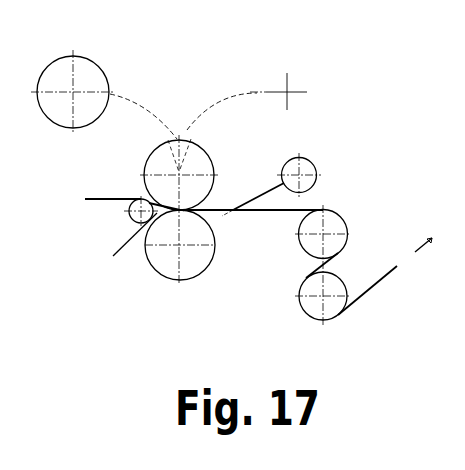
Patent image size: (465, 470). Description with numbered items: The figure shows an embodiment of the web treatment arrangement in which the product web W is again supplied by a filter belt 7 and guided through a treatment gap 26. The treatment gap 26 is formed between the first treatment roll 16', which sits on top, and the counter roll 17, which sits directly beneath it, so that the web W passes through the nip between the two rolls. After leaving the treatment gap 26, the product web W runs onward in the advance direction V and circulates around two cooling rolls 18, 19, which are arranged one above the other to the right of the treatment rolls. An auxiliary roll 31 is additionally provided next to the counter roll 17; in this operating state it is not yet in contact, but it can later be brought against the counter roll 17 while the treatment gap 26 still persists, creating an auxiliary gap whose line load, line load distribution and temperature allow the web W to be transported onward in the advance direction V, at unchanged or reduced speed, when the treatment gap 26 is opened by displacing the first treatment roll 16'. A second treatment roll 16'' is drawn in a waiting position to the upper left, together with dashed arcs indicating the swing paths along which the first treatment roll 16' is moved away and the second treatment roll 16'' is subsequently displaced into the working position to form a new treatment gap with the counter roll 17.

The second treatment roll 16'' is at (90, 73).
The first treatment roll 16' is at (204, 199).
The counter roll 17 is at (196, 262).
The filter belt 7 is at (122, 258).
The auxiliary roll 31 is at (307, 168).
The cooling roll 18 is at (333, 225).
The cooling roll 19 is at (333, 312).
The treatment gap 26 is at (214, 199).
The product web W is at (273, 212).
The advance direction V is at (423, 234).